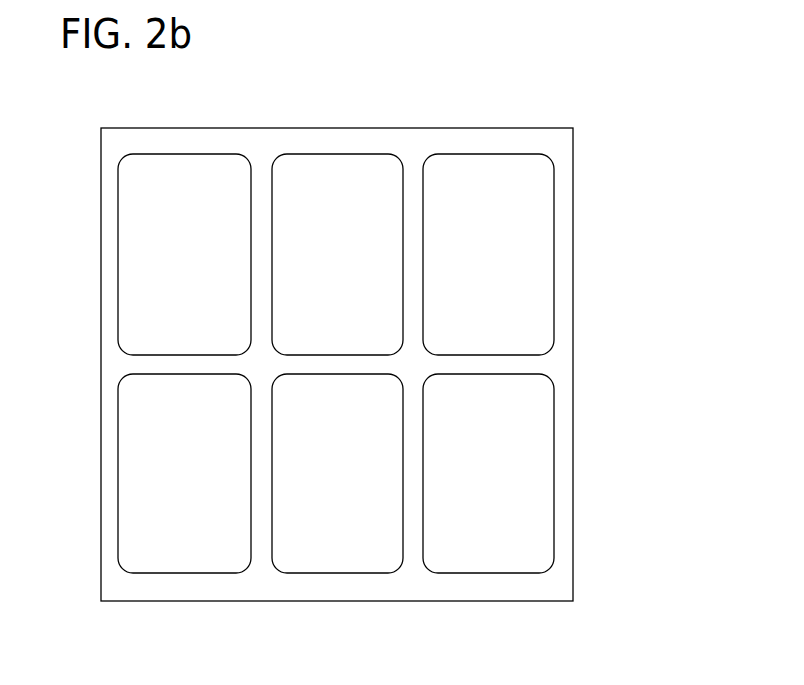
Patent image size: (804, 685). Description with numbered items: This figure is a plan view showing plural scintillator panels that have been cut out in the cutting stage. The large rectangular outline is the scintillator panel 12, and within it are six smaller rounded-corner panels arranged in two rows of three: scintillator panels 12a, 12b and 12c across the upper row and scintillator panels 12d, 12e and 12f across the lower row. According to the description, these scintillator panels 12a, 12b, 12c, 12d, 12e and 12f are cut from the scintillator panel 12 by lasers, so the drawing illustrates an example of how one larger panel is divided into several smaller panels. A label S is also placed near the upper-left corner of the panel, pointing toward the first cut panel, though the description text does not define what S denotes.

The scintillator panel 12 is at (612, 260).
The surface S is at (150, 150).
The scintillator panel 12a is at (197, 170).
The scintillator panel 12b is at (350, 172).
The scintillator panel 12c is at (505, 173).
The scintillator panel 12d is at (198, 556).
The scintillator panel 12e is at (352, 553).
The scintillator panel 12f is at (503, 553).